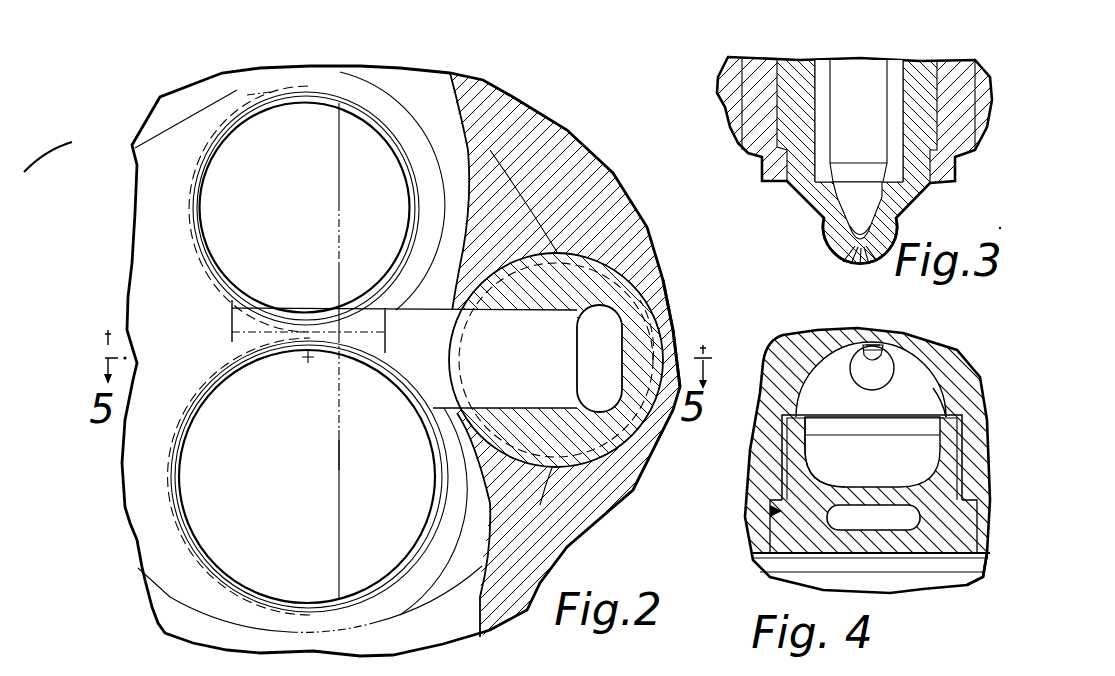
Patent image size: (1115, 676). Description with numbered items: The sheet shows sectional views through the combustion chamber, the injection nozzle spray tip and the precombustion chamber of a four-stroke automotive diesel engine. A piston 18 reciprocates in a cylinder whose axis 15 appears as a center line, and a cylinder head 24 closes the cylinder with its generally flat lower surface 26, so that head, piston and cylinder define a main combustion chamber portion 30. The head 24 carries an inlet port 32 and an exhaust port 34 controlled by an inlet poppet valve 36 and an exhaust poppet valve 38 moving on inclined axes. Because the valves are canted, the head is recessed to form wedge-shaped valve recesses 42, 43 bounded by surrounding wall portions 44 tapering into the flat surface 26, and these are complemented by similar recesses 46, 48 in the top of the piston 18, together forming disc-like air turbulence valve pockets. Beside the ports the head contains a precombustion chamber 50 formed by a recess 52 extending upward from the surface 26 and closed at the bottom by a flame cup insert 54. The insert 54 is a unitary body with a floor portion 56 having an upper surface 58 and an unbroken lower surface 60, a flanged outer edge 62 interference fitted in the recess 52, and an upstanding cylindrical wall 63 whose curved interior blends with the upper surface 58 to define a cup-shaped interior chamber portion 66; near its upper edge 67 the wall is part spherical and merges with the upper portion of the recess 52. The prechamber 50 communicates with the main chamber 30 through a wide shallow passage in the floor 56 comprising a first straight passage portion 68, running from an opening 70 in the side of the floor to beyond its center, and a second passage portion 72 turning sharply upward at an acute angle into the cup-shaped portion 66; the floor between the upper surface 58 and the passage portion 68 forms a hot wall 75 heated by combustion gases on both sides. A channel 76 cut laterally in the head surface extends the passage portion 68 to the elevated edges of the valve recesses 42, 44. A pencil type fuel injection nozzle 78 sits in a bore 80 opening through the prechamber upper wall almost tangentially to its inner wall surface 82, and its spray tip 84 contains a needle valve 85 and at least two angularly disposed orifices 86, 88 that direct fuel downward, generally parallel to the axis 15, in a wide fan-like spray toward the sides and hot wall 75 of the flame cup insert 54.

In FIG. 2, the cylinder axis 15 is at (306, 359).
In FIG. 2, the piston 18 is at (175, 598).
In FIG. 4, the piston 18 is at (793, 577).
In FIG. 2, the cylinder head 24 is at (478, 87).
In FIG. 3, the cylinder head 24 is at (722, 85).
In FIG. 4, the cylinder head 24 is at (747, 520).
In FIG. 2, the lower surface of cylinder head 26 is at (203, 92).
In FIG. 2, the main combustion chamber portion 30 is at (172, 133).
In FIG. 4, the main combustion chamber portion 30 is at (760, 560).
In FIG. 2, the inlet port 32 is at (238, 532).
In FIG. 2, the exhaust port 34 is at (232, 236).
In FIG. 2, the inlet poppet valve 36 is at (205, 447).
In FIG. 2, the exhaust poppet valve 38 is at (243, 268).
In FIG. 2, the valve recess 42 is at (427, 598).
In FIG. 2, the valve recess 43 is at (353, 127).
In FIG. 2, the surrounding wall portions 44 is at (407, 107).
In FIG. 2, the piston recess 46 is at (295, 450).
In FIG. 2, the piston recess 48 is at (322, 176).
In FIG. 4, the precombustion chamber 50 is at (913, 370).
In FIG. 4, the prechamber recess 52 is at (933, 388).
In FIG. 2, the flame cup insert 54 is at (643, 255).
In FIG. 4, the flame cup insert 54 is at (768, 508).
In FIG. 2, the floor portion 56 is at (660, 327).
In FIG. 4, the floor portion 56 is at (937, 540).
In FIG. 4, the upper surface of floor 58 is at (877, 487).
In FIG. 4, the lower surface of floor 60 is at (967, 557).
In FIG. 2, the flanged outer edge 62 is at (655, 355).
In FIG. 4, the flanged outer edge 62 is at (983, 507).
In FIG. 4, the cylindrical wall 63 is at (950, 450).
In FIG. 4, the cup-shaped interior chamber portion 66 is at (853, 440).
In FIG. 4, the upper edge of wall 67 is at (957, 417).
In FIG. 2, the first passage portion 68 is at (528, 327).
In FIG. 4, the first passage portion 68 is at (903, 532).
In FIG. 2, the opening 70 is at (457, 386).
In FIG. 2, the second passage portion 72 is at (595, 382).
In FIG. 4, the hot wall 75 is at (853, 487).
In FIG. 2, the channel 76 is at (407, 325).
In FIG. 3, the fuel injection nozzle 78 is at (972, 90).
In FIG. 4, the fuel injection nozzle 78 is at (870, 347).
In FIG. 3, the nozzle bore 80 is at (755, 72).
In FIG. 4, the nozzle bore 80 is at (887, 363).
In FIG. 4, the inner wall surface of prechamber 82 is at (880, 427).
In FIG. 3, the spray tip 84 is at (835, 240).
In FIG. 4, the spray tip 84 is at (863, 357).
In FIG. 3, the needle valve 85 is at (858, 83).
In FIG. 3, the orifice 86 is at (847, 262).
In FIG. 3, the orifice 88 is at (873, 265).